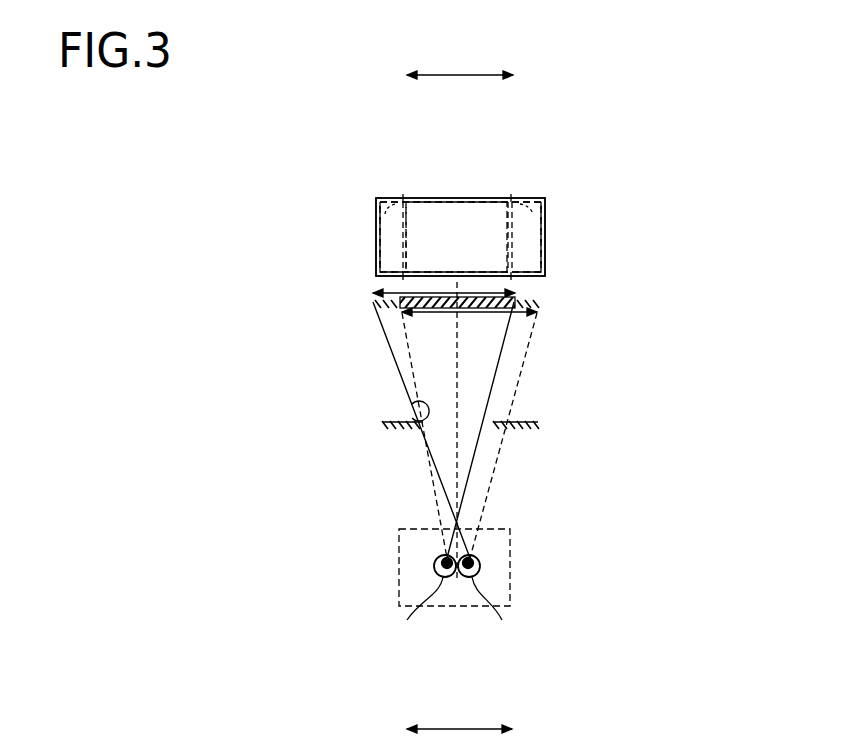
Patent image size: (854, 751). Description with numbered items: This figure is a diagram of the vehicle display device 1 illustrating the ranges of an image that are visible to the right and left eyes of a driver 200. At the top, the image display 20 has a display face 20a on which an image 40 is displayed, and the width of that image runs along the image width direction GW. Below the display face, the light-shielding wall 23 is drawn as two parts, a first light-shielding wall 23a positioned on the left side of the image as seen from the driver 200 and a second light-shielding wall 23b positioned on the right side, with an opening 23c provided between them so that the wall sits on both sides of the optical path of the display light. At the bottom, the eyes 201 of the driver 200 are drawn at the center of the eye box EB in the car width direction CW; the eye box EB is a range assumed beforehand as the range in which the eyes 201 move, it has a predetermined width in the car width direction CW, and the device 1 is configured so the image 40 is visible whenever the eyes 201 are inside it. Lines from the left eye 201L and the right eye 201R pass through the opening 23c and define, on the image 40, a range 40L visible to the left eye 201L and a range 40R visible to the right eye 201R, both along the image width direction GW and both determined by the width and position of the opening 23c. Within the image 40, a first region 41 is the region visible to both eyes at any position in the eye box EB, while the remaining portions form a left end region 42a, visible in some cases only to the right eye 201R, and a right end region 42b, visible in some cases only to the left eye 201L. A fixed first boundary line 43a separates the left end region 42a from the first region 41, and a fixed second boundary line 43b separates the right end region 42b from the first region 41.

The vehicle display device 1 is at (192, 148).
The image display 20 is at (413, 170).
The display face 20a is at (488, 196).
The image 40 is at (458, 227).
The first region 41 is at (427, 215).
The left end region 42a is at (376, 208).
The right end region 42b is at (545, 208).
The first boundary line 43a is at (402, 190).
The second boundary line 43b is at (513, 190).
The range visible to right eye 40R is at (380, 288).
The range visible to left eye 40L is at (535, 318).
The light-shielding wall 23 is at (453, 383).
The first light-shielding wall 23a is at (384, 419).
The second light-shielding wall 23b is at (507, 421).
The opening 23c is at (412, 404).
The eye box EB is at (398, 550).
The driver 200 is at (465, 583).
The eyes 201 is at (458, 626).
The left eye 201L is at (419, 603).
The right eye 201R is at (495, 603).
The image width direction GW is at (460, 62).
The car width direction CW is at (459, 719).